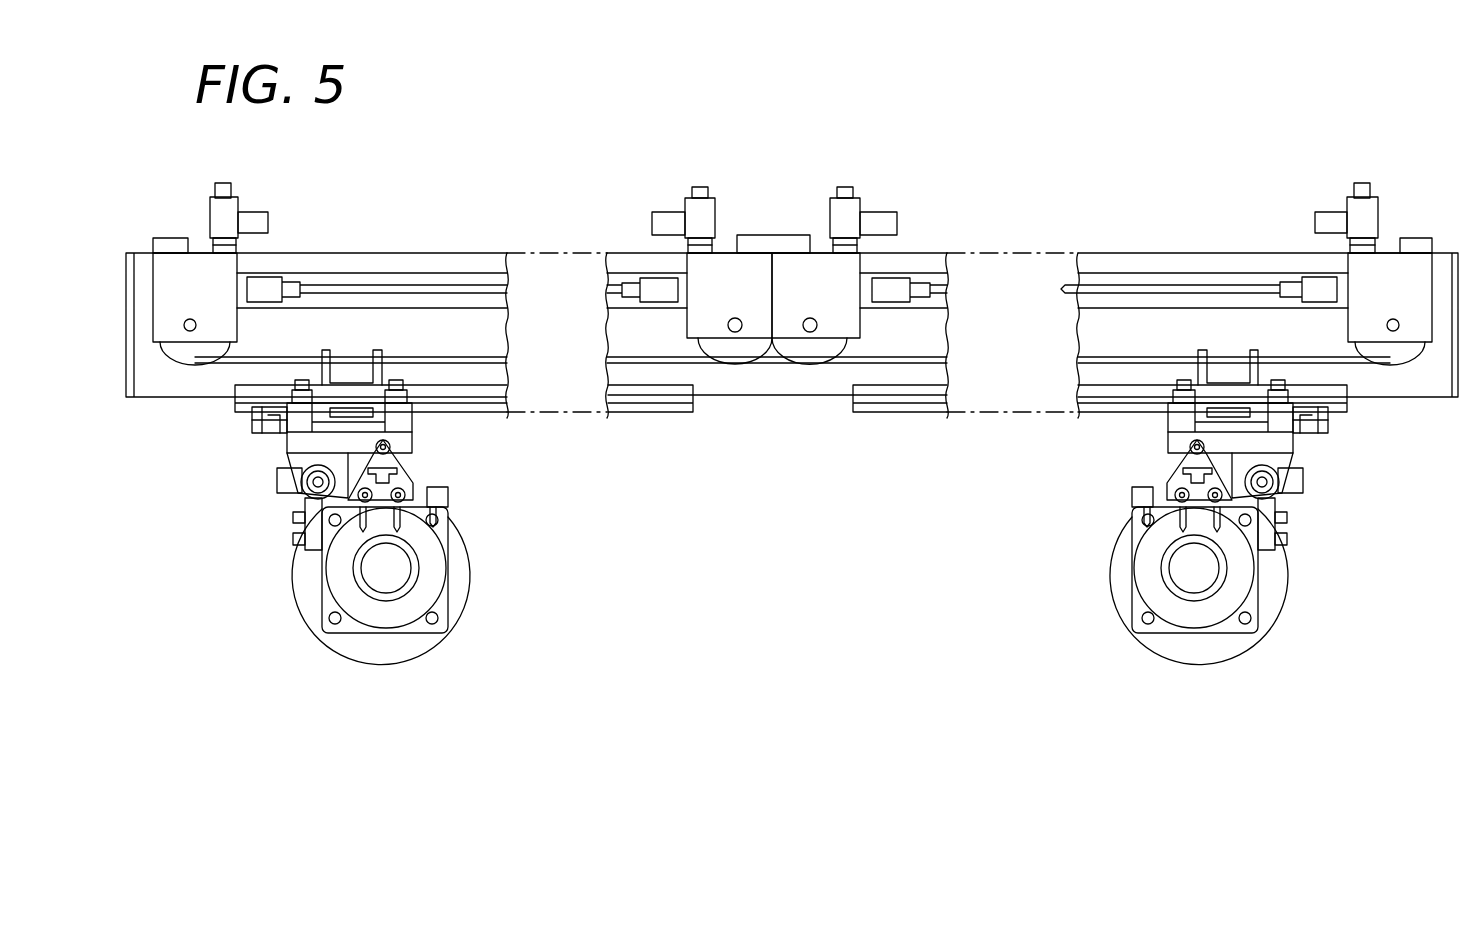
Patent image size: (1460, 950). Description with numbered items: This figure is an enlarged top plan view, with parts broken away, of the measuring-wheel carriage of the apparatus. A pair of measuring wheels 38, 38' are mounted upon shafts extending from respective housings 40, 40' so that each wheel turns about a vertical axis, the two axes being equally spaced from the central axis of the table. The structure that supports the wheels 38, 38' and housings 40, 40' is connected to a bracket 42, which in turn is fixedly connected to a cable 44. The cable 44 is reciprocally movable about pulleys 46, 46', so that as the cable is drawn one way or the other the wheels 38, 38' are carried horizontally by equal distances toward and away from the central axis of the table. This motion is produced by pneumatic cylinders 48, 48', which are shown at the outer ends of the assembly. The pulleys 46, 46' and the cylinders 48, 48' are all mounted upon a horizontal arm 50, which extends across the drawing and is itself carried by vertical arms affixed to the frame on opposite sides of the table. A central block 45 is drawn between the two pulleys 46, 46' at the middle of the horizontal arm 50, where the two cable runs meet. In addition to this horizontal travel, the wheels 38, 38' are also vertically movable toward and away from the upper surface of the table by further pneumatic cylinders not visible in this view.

The measuring wheel 38 is at (424, 587).
The measuring wheel 38' is at (1183, 603).
The housing 40 is at (428, 554).
The housing 40' is at (1128, 570).
The bracket 42 is at (334, 370).
The cable 44 is at (427, 354).
The center block 45 is at (737, 355).
The pulley 46 is at (201, 314).
The pulley 46' is at (860, 320).
The pneumatic cylinder 48 is at (317, 305).
The pneumatic cylinder 48' is at (1246, 274).
The horizontal arm 50 is at (1108, 262).